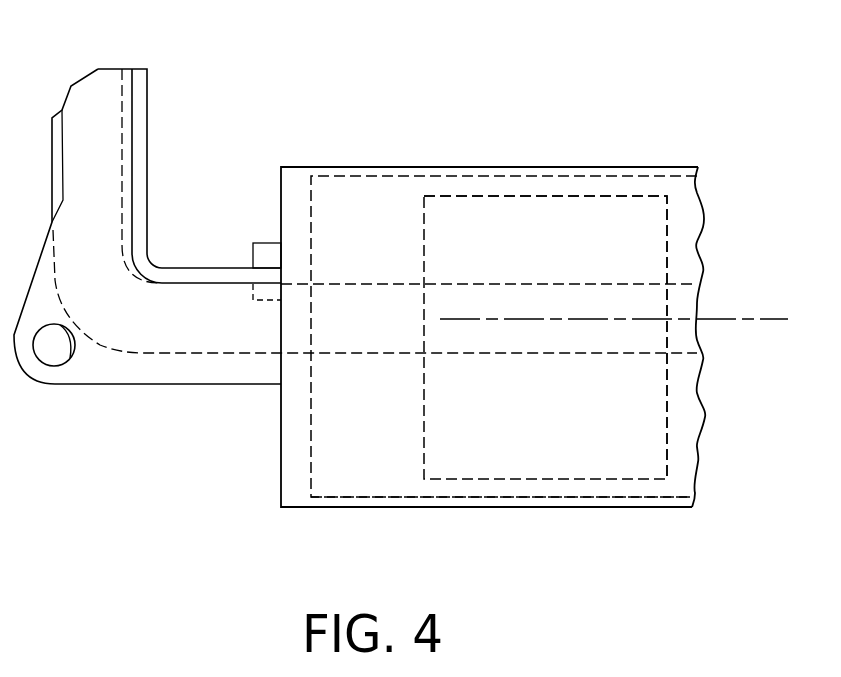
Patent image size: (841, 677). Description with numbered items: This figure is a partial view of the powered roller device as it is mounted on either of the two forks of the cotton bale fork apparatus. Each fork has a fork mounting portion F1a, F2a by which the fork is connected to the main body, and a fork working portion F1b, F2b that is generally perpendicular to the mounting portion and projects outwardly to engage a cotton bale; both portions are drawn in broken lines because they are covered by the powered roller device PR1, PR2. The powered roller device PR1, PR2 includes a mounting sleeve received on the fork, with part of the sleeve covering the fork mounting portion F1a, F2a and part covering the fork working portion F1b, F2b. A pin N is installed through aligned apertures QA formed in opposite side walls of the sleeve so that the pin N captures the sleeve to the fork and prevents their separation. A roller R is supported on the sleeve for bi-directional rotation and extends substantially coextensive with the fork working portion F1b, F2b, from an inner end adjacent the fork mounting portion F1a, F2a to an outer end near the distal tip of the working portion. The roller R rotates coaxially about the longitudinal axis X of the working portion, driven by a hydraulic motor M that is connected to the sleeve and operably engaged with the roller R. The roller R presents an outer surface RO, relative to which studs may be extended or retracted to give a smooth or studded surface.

The first and second flanges (bracket arm) F1a, F2a is at (98, 95).
The first and second projections (housing block) PR1, PR2 is at (350, 165).
The first and second flange portions F1b, F2b is at (595, 297).
The outer surface of the roller RO is at (663, 167).
The longitudinal axis X is at (768, 318).
The pin N is at (58, 366).
The apertures QA is at (63, 360).
The hydraulic motor M is at (525, 425).
The roller R is at (629, 508).